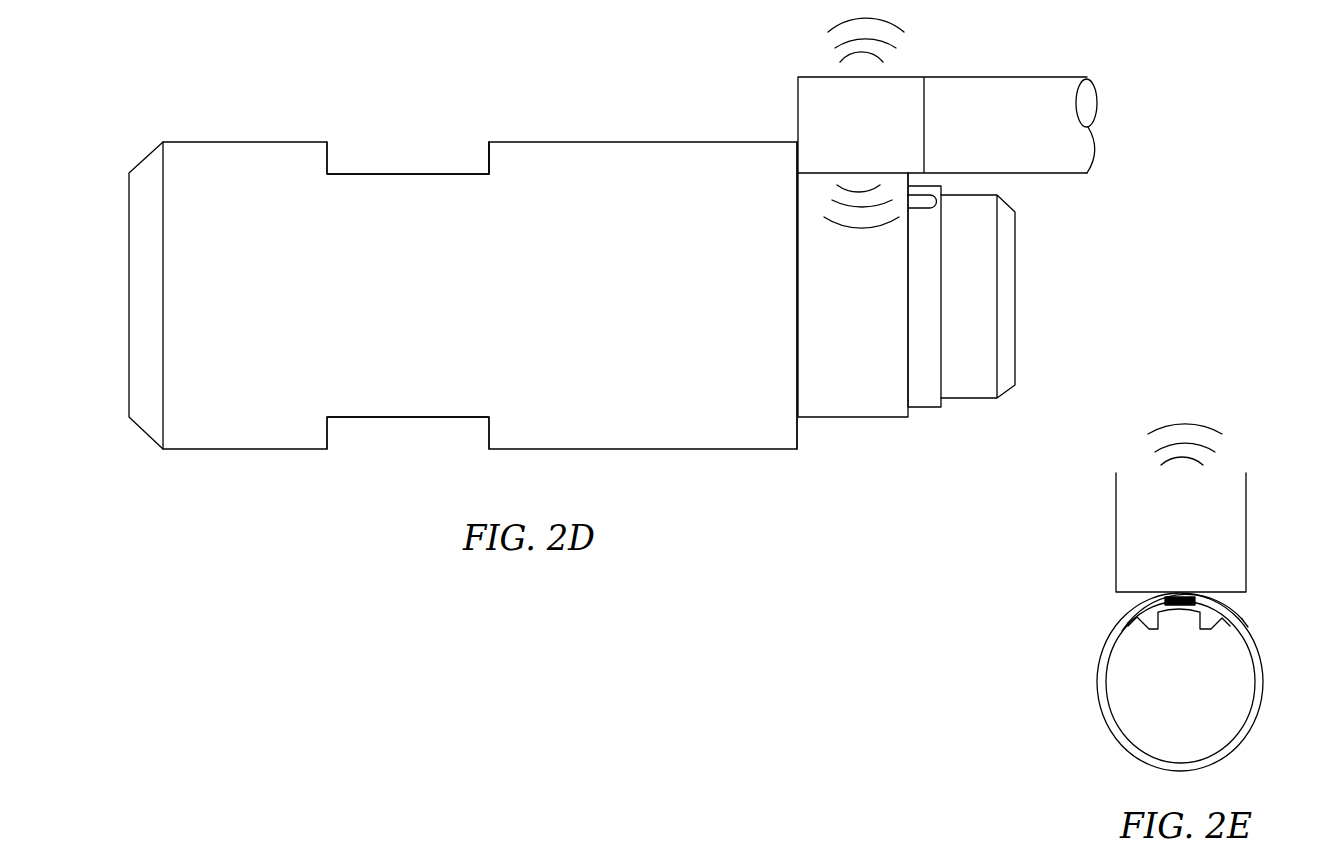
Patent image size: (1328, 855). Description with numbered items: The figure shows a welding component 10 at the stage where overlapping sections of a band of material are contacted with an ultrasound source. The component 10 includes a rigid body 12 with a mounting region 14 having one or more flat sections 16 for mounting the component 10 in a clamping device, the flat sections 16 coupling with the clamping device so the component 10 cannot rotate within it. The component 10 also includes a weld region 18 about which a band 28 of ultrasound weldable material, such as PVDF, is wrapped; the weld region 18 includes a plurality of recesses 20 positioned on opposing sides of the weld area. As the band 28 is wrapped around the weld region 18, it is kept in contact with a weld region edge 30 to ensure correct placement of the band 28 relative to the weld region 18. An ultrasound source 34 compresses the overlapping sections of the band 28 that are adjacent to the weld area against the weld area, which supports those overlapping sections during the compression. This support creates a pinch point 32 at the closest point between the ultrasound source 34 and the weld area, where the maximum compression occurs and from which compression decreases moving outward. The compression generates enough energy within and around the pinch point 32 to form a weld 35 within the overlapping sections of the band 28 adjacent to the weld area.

In FIG. 2D, the welding component 10 is at (440, 83).
In FIG. 2D, the rigid body 12 is at (968, 402).
In FIG. 2D, the mounting region 14 is at (367, 173).
In FIG. 2D, the flat sections 16 is at (448, 173).
In FIG. 2D, the weld region 18 is at (924, 412).
In FIG. 2E, the recesses 20 is at (1157, 625).
In FIG. 2D, the band 28 is at (854, 418).
In FIG. 2E, the band 28 is at (1099, 708).
In FIG. 2D, the weld region edge 30 is at (798, 433).
In FIG. 2E, the pinch point 32 is at (1192, 593).
In FIG. 2D, the ultrasound source 34 is at (817, 92).
In FIG. 2E, the ultrasound source 34 is at (1135, 533).
In FIG. 2E, the weld 35 is at (1158, 593).